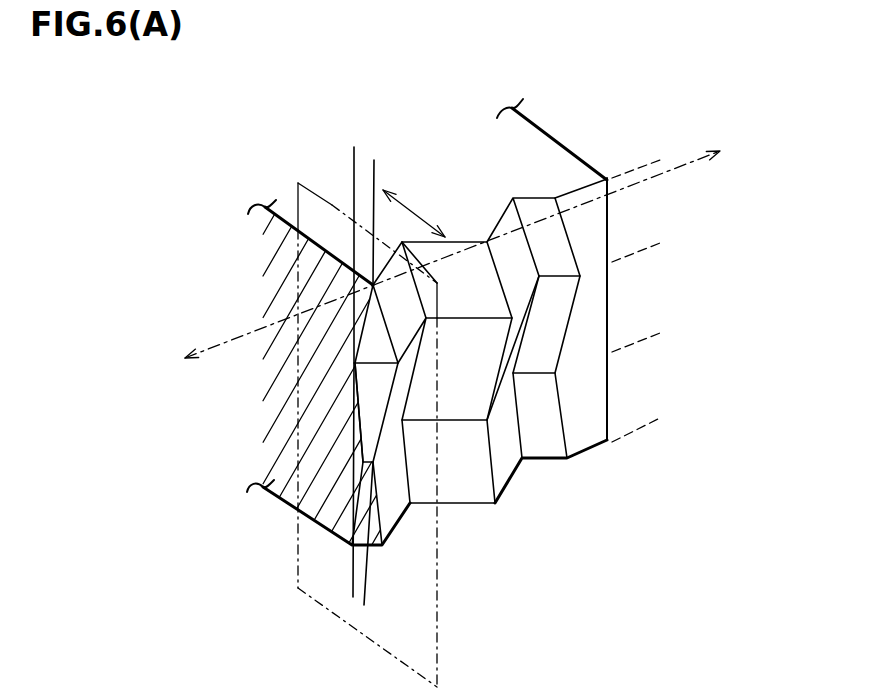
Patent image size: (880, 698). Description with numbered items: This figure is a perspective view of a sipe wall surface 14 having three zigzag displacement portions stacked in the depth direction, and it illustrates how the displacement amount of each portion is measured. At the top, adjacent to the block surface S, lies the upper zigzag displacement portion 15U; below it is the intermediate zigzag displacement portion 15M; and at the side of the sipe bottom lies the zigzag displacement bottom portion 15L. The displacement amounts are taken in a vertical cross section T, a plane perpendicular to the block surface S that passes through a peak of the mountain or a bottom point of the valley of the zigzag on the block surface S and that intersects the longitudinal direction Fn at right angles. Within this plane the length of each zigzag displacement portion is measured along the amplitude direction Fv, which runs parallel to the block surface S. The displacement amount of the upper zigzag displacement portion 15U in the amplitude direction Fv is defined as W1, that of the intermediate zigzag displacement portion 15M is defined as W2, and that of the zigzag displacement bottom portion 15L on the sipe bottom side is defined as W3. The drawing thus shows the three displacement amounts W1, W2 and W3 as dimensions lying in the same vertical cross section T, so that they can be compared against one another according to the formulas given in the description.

The sipe wall surface 14 is at (539, 424).
The upper zigzag displacement portion 15U is at (663, 160).
The intermediate zigzag displacement portion 15M is at (663, 250).
The zigzag displacement bottom portion 15L is at (663, 340).
The vertical cross section T is at (277, 190).
The block surface S is at (532, 150).
The displacement amount of upper zigzag displacement portion W1 is at (398, 187).
The displacement amount of intermediate zigzag displacement portion W2 is at (387, 445).
The displacement amount of zigzag displacement bottom portion W3 is at (327, 575).
The amplitude direction Fv is at (417, 208).
The longitudinal direction Fn is at (712, 147).